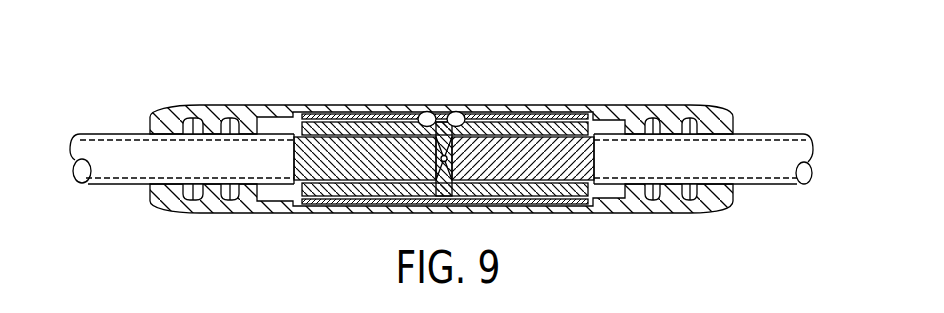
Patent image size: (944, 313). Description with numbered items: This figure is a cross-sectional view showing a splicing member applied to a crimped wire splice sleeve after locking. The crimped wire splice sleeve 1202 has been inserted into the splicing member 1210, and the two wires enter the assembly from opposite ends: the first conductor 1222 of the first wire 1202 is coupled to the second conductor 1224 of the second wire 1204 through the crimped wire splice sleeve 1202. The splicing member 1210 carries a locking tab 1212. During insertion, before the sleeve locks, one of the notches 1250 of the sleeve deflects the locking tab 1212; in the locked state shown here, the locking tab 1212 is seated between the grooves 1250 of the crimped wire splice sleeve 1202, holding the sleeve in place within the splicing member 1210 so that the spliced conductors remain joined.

The crimped wire splice sleeve 1202 is at (90, 186).
The second wire 1204 is at (793, 186).
The splicing member 1210 is at (252, 105).
The locking tab 1212 is at (442, 110).
The first conductor 1222 is at (113, 136).
The second conductor 1224 is at (762, 140).
The grooves 1250 is at (423, 110).